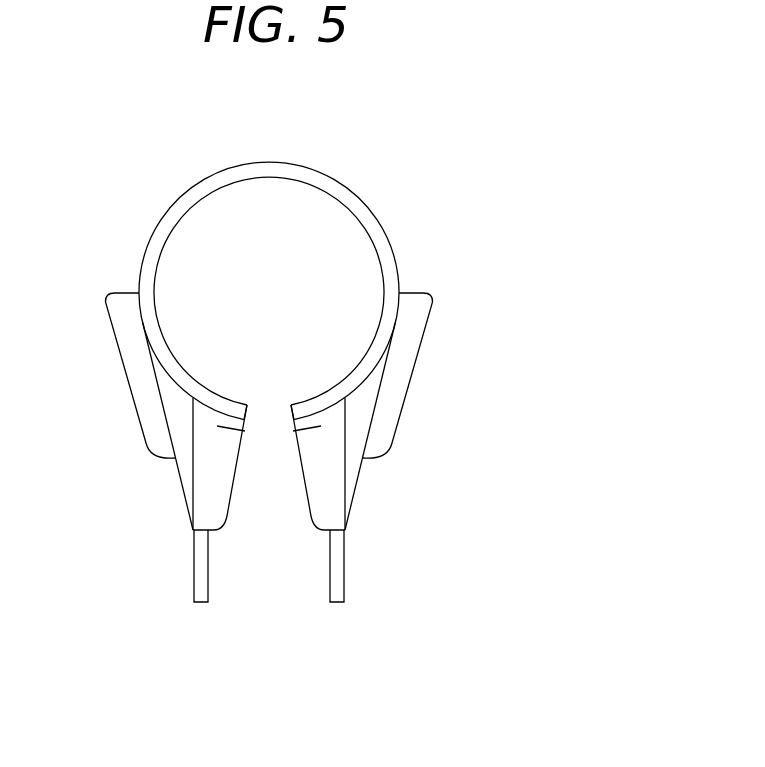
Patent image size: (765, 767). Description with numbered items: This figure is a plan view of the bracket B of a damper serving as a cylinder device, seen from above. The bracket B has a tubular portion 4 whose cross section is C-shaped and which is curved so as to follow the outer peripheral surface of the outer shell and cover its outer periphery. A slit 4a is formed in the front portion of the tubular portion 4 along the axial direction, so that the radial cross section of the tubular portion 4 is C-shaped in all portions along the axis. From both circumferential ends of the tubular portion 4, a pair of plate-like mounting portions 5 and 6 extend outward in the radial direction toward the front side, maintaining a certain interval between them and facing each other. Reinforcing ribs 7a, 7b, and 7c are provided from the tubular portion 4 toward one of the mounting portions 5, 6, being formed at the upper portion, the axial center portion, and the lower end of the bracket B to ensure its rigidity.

The bracket B is at (370, 187).
The tubular portion 4 is at (268, 163).
The slit 4a is at (267, 415).
The mounting portion 5 is at (197, 603).
The mounting portion 6 is at (342, 603).
The reinforcing rib 7a is at (225, 505).
The reinforcing rib 7b is at (185, 473).
The reinforcing rib 7c is at (127, 386).